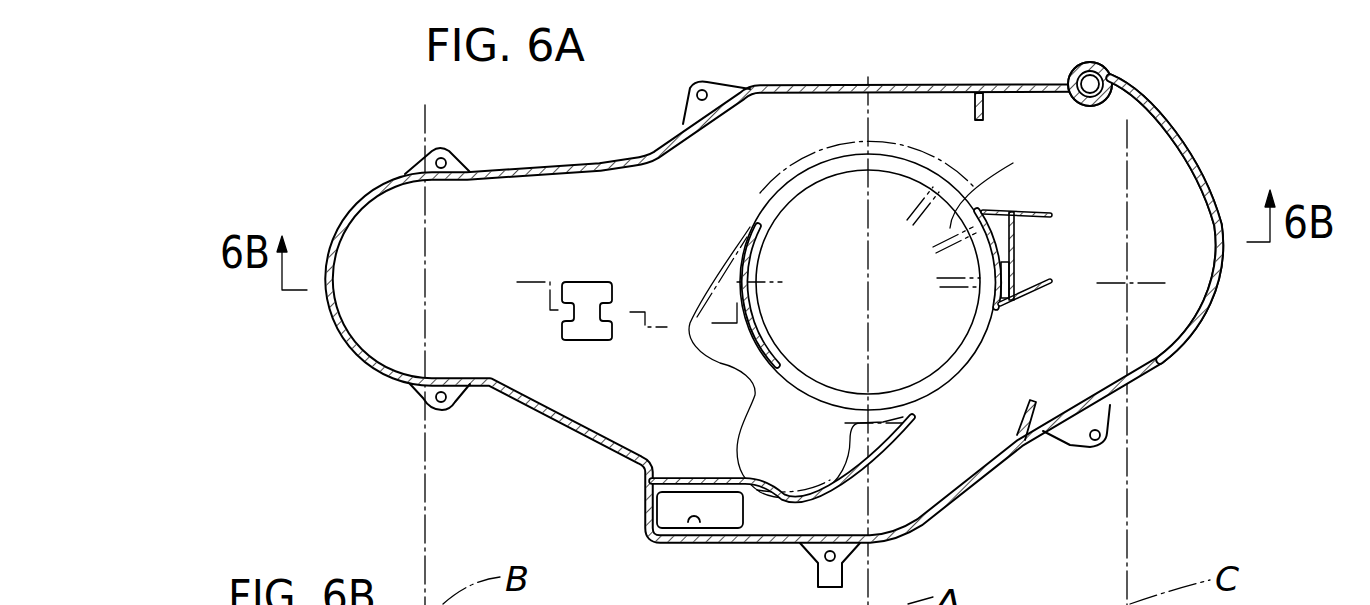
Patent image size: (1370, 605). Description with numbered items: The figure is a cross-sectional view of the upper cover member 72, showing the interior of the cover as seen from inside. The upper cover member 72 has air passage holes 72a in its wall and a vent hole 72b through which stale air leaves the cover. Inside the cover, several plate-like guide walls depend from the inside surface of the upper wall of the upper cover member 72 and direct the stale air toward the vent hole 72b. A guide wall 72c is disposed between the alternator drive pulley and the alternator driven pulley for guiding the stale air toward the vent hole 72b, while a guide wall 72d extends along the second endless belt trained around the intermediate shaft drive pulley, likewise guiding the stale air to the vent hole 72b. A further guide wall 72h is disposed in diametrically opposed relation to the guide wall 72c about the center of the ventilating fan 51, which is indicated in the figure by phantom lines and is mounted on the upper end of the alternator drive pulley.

The upper cover member 72 is at (357, 140).
The air passage holes 72a is at (1216, 275).
The vent hole 72b is at (695, 526).
The guide wall 72c is at (1033, 302).
The guide wall 72d is at (900, 448).
The guide wall 72h is at (758, 348).
The ventilating fan 51 is at (975, 182).